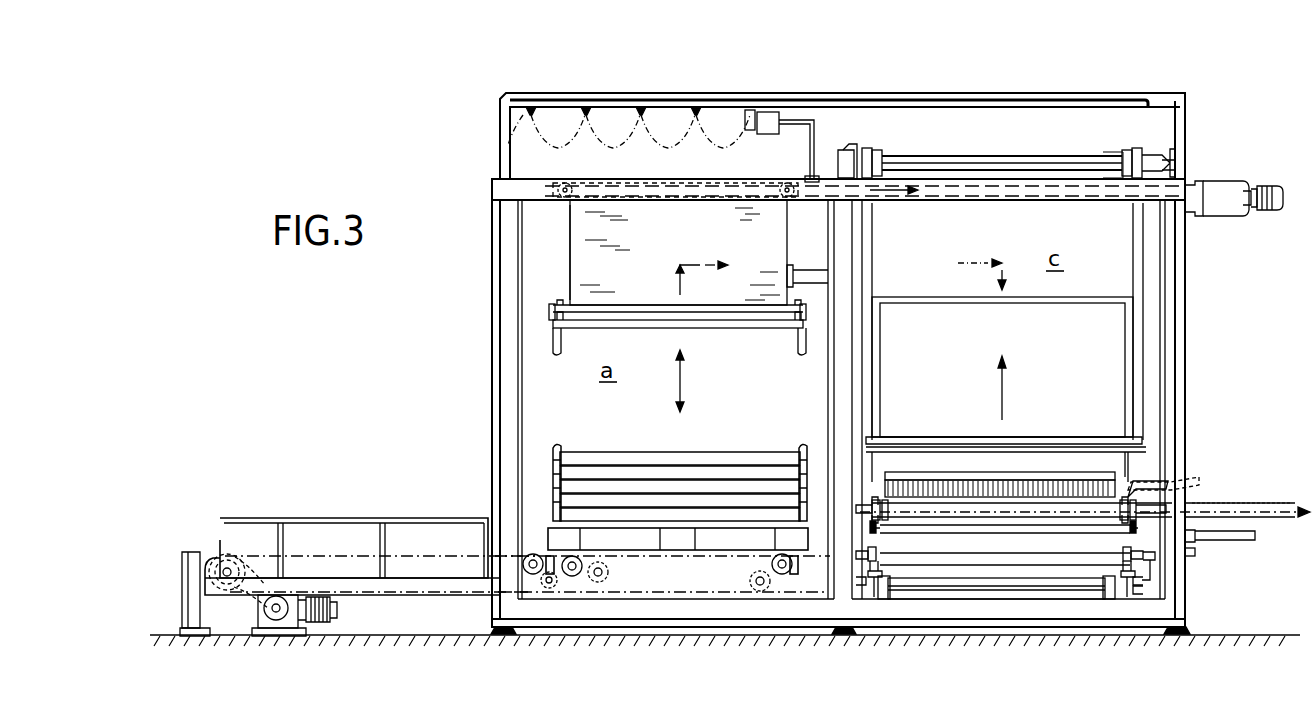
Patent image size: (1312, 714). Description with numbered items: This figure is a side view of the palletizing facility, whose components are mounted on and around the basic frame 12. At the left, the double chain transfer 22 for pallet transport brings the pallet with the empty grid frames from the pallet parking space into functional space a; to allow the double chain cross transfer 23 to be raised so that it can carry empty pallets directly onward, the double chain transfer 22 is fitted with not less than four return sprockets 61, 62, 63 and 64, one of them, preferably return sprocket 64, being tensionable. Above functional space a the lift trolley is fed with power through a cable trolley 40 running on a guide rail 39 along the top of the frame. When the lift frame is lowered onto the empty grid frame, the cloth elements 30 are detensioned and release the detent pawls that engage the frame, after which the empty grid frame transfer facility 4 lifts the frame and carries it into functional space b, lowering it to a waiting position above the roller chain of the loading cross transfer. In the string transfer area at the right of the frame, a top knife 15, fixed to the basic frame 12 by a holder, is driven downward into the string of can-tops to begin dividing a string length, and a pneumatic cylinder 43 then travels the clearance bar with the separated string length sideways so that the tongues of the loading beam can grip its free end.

The empty grid frame transfer facility 4 is at (580, 258).
The basic frame 12 is at (499, 356).
The top knife 15 is at (1140, 494).
The double chain transfer 22 is at (398, 555).
The double chain cross transfer 23 is at (550, 550).
The cloth elements 30 is at (691, 237).
The guide rail 39 is at (845, 98).
The cable trolley 40 is at (643, 104).
The pneumatic cylinder 43 is at (1225, 538).
The return sprocket 61 is at (527, 575).
The return sprocket 62 is at (551, 583).
The return sprocket 63 is at (574, 575).
The return sprocket 64 is at (607, 572).